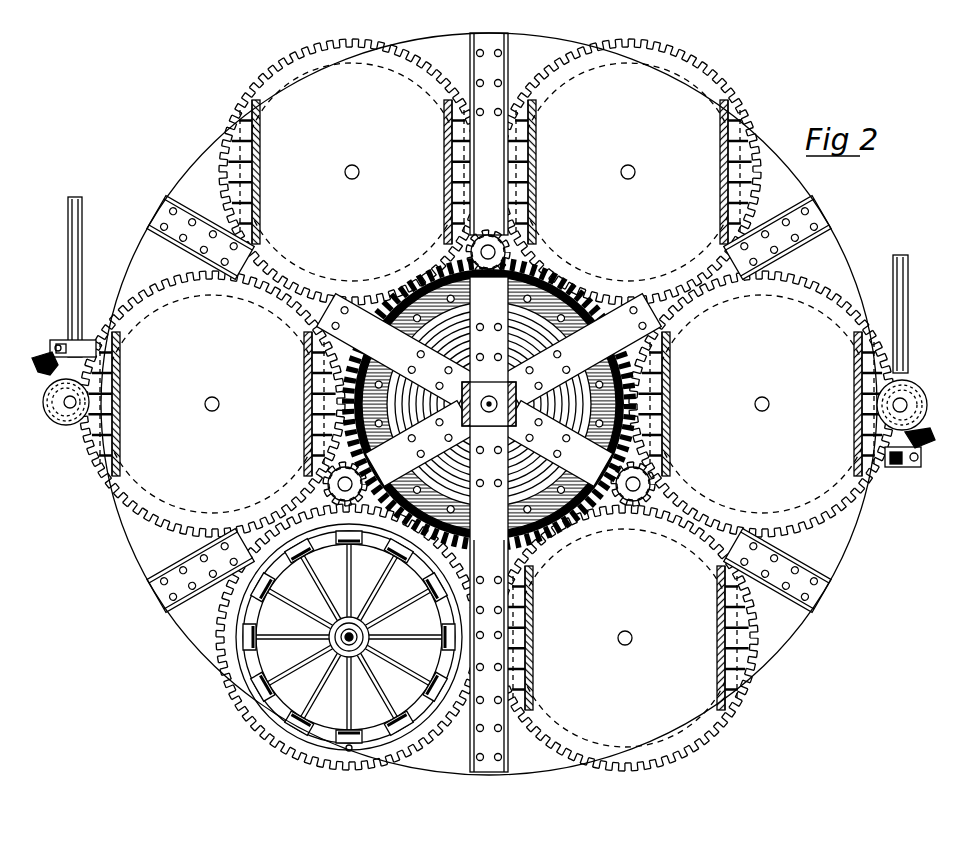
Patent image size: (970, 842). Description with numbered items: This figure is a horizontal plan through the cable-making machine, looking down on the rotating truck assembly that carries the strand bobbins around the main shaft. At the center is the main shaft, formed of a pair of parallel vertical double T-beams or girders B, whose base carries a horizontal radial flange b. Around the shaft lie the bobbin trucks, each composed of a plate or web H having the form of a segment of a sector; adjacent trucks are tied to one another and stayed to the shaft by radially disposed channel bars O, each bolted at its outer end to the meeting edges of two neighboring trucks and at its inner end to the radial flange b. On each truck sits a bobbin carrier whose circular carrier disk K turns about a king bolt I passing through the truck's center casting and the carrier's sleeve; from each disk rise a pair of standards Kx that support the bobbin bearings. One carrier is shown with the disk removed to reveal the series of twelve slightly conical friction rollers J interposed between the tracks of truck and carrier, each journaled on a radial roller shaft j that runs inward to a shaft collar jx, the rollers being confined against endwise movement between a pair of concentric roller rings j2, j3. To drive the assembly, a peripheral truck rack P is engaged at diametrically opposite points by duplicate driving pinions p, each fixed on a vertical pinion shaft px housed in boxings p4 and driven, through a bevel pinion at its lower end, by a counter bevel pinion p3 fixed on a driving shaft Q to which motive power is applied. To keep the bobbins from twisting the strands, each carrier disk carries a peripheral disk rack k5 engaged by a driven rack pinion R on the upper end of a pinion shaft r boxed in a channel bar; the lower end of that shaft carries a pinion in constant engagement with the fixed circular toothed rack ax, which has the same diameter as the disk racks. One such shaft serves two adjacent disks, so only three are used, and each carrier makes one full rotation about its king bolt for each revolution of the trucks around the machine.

The peripheral truck rack P is at (182, 182).
The plate or web H is at (489, 402).
The channel bars O is at (489, 412).
The double T-beams or girders B is at (489, 409).
The radial flange b is at (489, 404).
The carrier disk K is at (487, 405).
The disk rack k5 is at (338, 50).
The standards Kx is at (263, 152).
The king bolt I is at (360, 174).
The driven rack pinion R is at (489, 368).
The pinion shaft r is at (488, 252).
The friction rollers J is at (246, 605).
The radial roller shafts j is at (349, 637).
The shaft collar jx is at (362, 628).
The roller ring j2 is at (392, 598).
The roller ring j3 is at (388, 742).
The driving shaft Q is at (66, 250).
The driving pinion p is at (60, 436).
The pinion shaft px is at (64, 403).
The counter bevel pinion p3 is at (44, 366).
The boxings p4 is at (68, 342).
The fixed circular toothed rack ax is at (386, 292).